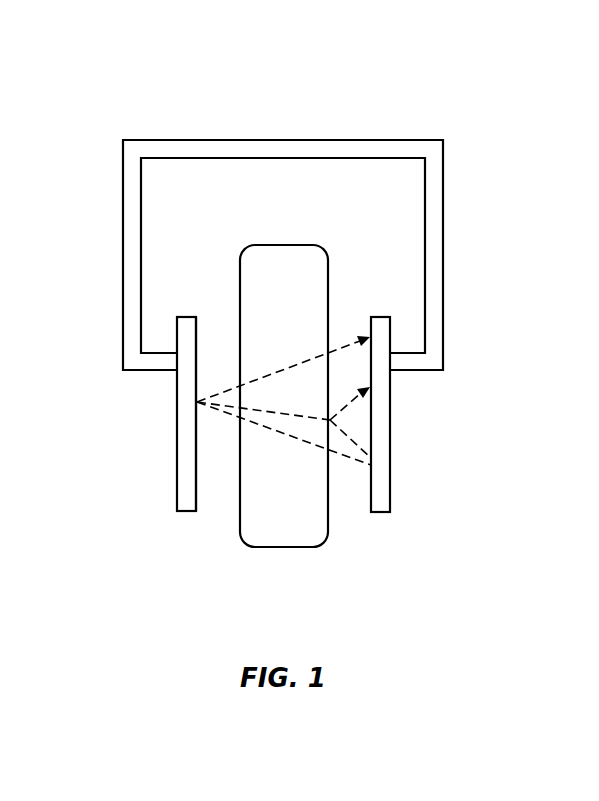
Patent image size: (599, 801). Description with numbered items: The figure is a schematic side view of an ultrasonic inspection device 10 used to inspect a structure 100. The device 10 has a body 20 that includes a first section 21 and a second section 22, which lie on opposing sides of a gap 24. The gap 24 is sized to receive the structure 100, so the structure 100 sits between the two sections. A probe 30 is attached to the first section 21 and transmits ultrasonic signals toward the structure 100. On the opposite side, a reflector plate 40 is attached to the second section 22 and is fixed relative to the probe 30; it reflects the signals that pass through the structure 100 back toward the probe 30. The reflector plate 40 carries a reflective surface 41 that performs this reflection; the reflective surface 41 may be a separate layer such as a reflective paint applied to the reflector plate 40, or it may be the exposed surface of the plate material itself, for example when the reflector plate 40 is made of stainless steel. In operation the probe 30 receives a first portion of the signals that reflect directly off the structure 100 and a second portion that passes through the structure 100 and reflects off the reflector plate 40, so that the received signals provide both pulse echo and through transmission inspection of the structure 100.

The ultrasonic inspection device 10 is at (176, 113).
The body 20 is at (345, 149).
The first section 21 is at (433, 283).
The second section 22 is at (131, 271).
The structure 100 is at (293, 282).
The reflector plate 40 is at (185, 471).
The reflective surface 41 is at (196, 480).
The probe 30 is at (380, 473).
The gap 24 is at (347, 505).